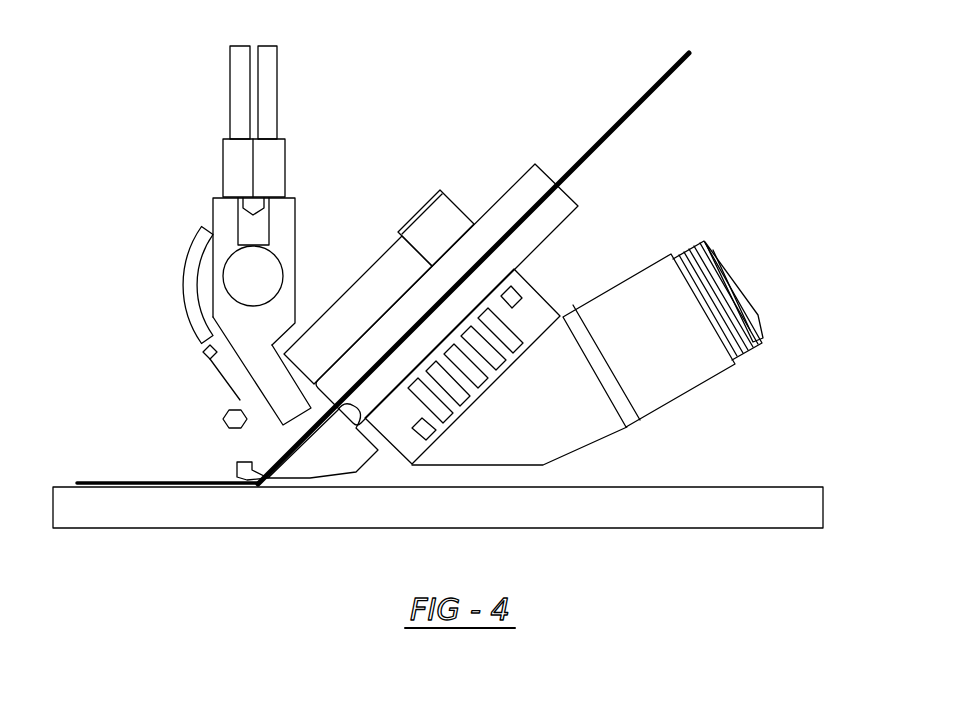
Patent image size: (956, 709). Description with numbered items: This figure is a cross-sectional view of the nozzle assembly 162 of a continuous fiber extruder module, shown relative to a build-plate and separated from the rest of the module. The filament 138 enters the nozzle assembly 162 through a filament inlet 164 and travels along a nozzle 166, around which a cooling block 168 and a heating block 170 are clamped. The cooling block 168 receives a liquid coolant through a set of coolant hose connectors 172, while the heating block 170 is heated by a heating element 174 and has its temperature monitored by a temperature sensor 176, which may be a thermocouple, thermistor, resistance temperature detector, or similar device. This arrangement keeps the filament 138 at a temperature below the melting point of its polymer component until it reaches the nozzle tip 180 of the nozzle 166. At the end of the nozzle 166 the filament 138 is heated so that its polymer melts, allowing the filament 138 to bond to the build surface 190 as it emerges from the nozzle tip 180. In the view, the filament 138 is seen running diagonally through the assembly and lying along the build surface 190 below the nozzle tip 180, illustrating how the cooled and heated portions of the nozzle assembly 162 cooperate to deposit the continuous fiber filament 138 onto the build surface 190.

The filament 138 is at (640, 103).
The nozzle assembly 162 is at (430, 101).
The filament inlet 164 is at (514, 200).
The nozzle 166 is at (390, 317).
The cooling block 168 is at (512, 310).
The heating block 170 is at (340, 462).
The coolant hose connectors 172 is at (697, 370).
The heating element 174 is at (243, 272).
The temperature sensor 176 is at (237, 360).
The nozzle tip 180 is at (237, 463).
The build surface 190 is at (628, 512).